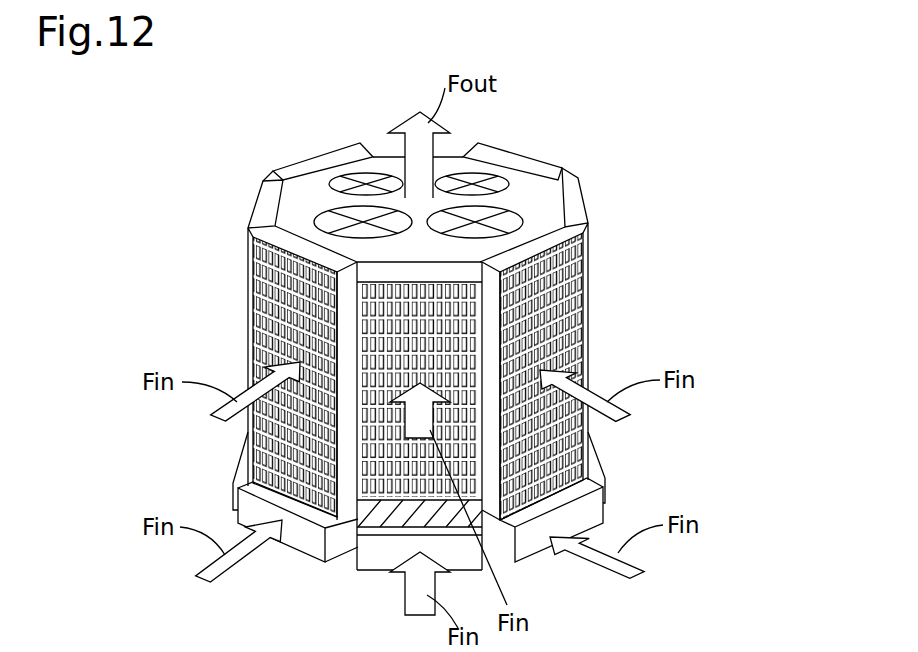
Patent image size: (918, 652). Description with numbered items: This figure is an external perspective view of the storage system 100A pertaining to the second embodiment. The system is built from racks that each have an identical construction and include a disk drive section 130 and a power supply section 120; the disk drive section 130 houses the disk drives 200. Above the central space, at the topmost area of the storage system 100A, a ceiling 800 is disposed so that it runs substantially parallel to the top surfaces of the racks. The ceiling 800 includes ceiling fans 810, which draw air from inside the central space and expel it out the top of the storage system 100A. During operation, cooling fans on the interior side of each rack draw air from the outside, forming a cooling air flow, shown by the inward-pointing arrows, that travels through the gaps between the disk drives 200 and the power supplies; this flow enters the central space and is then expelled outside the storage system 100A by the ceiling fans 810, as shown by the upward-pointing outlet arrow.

The storage system 100A is at (389, 83).
The ceiling 800 is at (535, 190).
The ceiling fans 810 is at (340, 182).
The disk drive section 130 is at (542, 245).
The power supply section 120 is at (528, 547).
The disk drives 200 is at (377, 503).